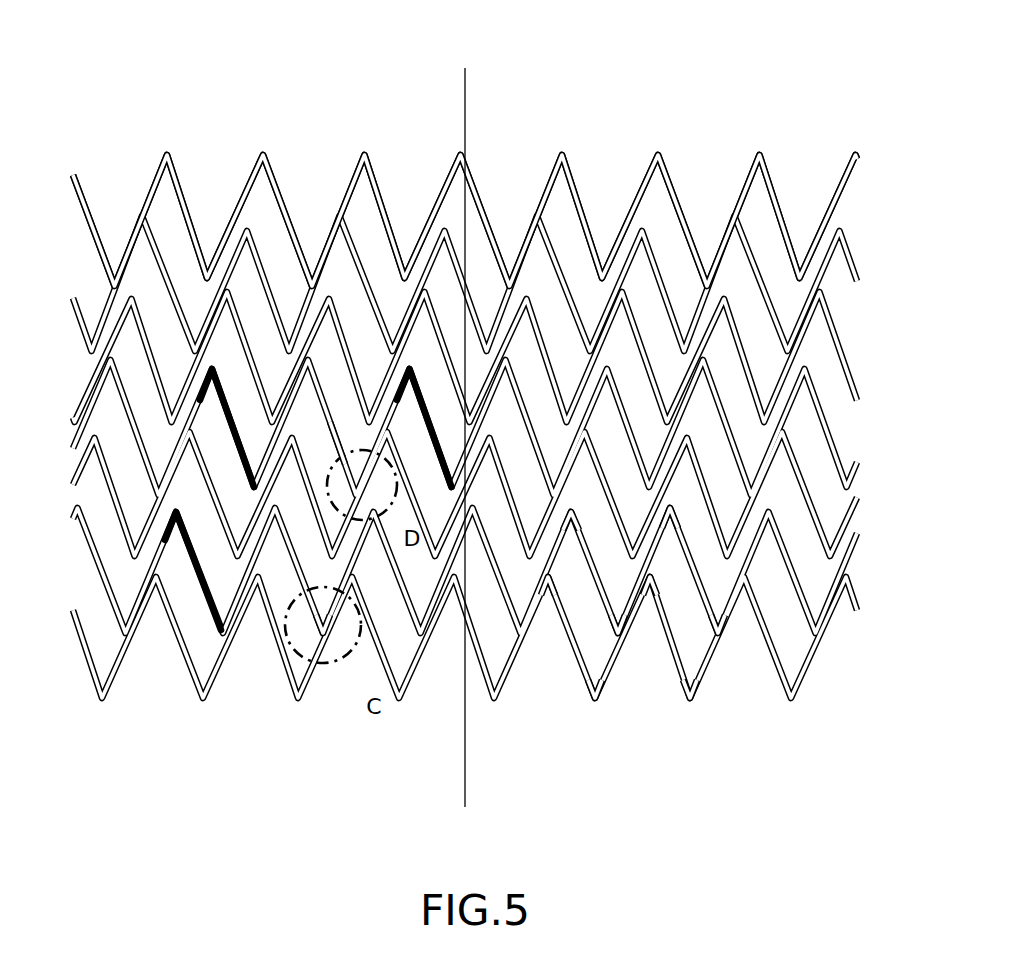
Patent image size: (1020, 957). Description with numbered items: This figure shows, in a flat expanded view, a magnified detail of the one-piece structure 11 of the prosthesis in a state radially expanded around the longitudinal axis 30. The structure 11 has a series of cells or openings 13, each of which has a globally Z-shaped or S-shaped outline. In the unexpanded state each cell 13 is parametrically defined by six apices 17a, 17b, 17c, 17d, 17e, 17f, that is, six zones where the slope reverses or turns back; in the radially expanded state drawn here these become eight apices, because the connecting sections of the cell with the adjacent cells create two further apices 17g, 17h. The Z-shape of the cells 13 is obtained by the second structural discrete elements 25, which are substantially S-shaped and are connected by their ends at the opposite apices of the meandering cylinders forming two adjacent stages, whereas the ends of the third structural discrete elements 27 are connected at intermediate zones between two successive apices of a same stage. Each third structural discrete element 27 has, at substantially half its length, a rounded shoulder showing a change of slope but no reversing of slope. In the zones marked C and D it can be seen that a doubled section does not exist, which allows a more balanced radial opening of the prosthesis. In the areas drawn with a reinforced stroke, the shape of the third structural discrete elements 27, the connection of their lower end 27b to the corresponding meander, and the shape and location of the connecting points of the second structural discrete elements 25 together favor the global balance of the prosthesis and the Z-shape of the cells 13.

The structure 11 is at (242, 172).
The cell 13 is at (367, 205).
The apex 17a is at (693, 702).
The apex 17b is at (653, 585).
The apex 17c is at (600, 705).
The apex 17d is at (566, 512).
The apex 17e is at (612, 631).
The apex 17f is at (667, 514).
The apex 17g is at (550, 580).
The apex 17h is at (717, 642).
The second structural discrete element 25 is at (230, 428).
The third structural discrete element 27 is at (353, 465).
The lower end 27b is at (327, 482).
The longitudinal axis 30 is at (470, 95).